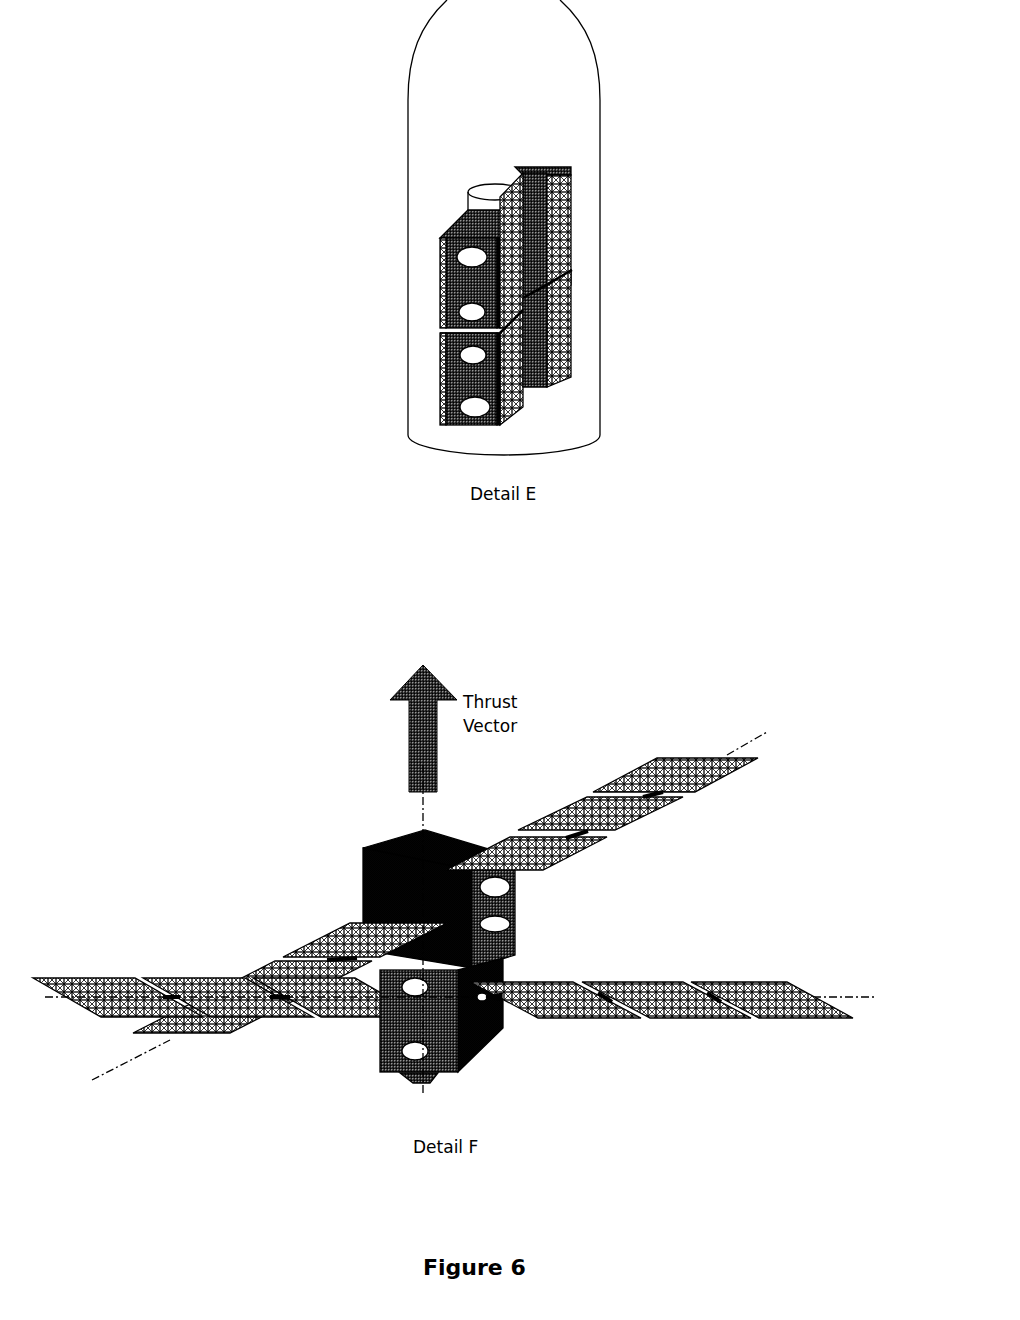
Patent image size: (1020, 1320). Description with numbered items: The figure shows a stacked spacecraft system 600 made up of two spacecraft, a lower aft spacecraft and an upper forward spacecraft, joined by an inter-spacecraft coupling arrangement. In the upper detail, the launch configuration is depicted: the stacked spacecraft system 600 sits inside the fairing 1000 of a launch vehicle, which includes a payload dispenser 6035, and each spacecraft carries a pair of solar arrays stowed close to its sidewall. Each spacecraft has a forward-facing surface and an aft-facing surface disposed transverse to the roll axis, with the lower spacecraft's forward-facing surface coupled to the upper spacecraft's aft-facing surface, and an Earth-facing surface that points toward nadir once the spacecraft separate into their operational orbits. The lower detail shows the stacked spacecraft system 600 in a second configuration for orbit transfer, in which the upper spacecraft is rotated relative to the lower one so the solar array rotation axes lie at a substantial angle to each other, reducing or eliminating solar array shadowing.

The fairing 1000 is at (580, 50).
The payload dispenser 6035 is at (492, 187).
The stacked spacecraft system 600 is at (388, 168).